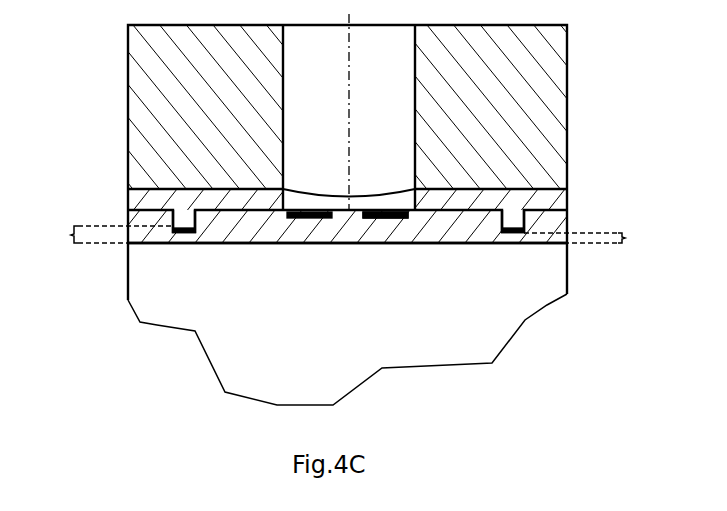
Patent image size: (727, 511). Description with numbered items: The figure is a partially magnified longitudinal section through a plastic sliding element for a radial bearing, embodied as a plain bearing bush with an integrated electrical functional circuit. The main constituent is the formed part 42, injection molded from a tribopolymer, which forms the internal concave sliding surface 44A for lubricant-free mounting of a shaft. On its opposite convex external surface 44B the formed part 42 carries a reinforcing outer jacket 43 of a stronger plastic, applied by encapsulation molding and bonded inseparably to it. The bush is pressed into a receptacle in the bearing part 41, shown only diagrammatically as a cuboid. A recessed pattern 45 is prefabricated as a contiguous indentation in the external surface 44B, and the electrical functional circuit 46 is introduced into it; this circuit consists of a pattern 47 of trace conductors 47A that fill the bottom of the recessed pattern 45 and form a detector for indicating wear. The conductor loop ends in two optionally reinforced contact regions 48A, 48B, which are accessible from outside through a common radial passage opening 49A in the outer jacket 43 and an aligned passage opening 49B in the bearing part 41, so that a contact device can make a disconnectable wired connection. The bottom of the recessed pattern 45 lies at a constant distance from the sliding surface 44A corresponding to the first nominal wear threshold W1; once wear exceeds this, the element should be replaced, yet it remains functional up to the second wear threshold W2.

The bearing part 41 is at (548, 82).
The formed part 42 is at (217, 237).
The outer jacket 43 is at (555, 195).
The sliding surface 44A is at (218, 247).
The external surface 44B is at (218, 195).
The recessed pattern 45 is at (517, 205).
The electrical functional circuit 46 is at (183, 224).
The trace conductor pattern 47 is at (390, 203).
The trace conductors 47A is at (525, 232).
The first contact region 48A is at (302, 218).
The second contact region 48B is at (385, 218).
The radial passage opening 49A is at (292, 201).
The passage opening 49B is at (341, 73).
The first nominal wear threshold W1 is at (595, 239).
The second wear threshold W2 is at (99, 236).